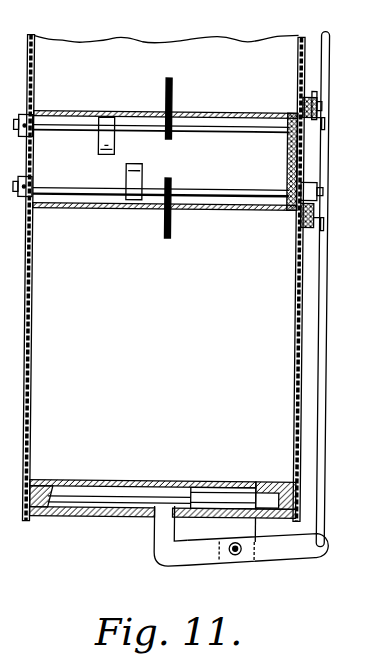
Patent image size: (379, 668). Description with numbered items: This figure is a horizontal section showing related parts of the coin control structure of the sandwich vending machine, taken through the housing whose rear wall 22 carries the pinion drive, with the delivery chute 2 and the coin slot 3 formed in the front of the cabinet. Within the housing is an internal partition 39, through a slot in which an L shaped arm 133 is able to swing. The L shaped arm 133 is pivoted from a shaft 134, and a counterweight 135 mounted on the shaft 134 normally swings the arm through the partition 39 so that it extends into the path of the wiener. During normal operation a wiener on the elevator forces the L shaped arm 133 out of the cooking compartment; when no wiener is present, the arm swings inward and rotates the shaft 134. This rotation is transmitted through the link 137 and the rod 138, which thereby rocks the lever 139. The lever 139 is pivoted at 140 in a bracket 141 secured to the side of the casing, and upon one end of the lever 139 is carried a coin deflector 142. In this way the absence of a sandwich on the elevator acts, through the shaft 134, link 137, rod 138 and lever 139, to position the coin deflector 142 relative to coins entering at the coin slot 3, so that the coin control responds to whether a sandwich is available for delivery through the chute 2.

The delivery chute 2 is at (48, 321).
The coin slot 3 is at (90, 518).
The rear wall 22 is at (304, 363).
The internal partition 39 is at (34, 153).
The L shaped arm 133 is at (170, 229).
The shaft 134 is at (238, 190).
The counterweight 135 is at (141, 172).
The link 137 is at (317, 181).
The rod 138 is at (327, 238).
The lever 139 is at (187, 561).
The pivot 140 is at (245, 557).
The bracket 141 is at (243, 527).
The coin deflector 142 is at (156, 530).